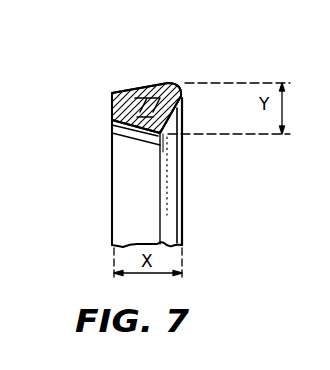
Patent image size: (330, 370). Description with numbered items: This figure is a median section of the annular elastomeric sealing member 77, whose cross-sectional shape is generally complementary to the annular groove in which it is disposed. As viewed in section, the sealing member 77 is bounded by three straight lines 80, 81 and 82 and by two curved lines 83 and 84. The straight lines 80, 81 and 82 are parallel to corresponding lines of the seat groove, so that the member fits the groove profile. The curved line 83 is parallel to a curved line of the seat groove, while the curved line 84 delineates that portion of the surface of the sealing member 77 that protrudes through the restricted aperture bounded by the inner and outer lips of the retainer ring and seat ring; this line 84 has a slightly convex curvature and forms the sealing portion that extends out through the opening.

The straight line 80 is at (112, 150).
The straight line 81 is at (112, 110).
The straight line 82 is at (131, 90).
The curved line 83 is at (183, 97).
The curved line 84 is at (182, 128).
The sealing member 77 is at (147, 107).